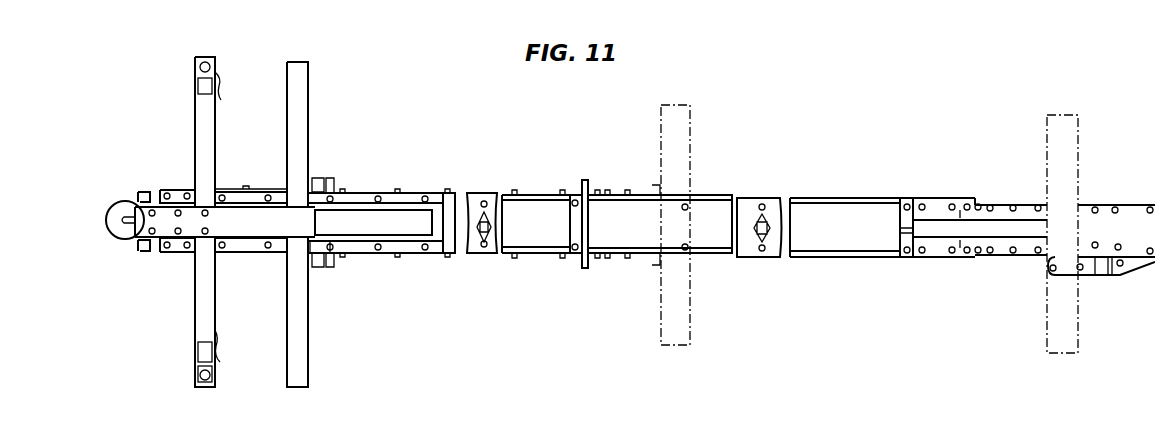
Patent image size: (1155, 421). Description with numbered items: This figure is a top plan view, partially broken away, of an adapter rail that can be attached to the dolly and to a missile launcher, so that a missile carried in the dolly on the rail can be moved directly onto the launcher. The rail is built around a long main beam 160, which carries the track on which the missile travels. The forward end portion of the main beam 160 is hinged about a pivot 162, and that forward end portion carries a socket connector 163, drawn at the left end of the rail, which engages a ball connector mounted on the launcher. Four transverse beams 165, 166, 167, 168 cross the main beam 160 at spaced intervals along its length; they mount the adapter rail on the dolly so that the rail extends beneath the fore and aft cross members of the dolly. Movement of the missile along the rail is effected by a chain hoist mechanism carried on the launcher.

The main beam 160 is at (828, 260).
The pivot 162 is at (327, 222).
The socket connector 163 is at (121, 201).
The transverse beam 165 is at (213, 301).
The transverse beam 166 is at (308, 311).
The transverse beam 167 is at (690, 324).
The transverse beam 168 is at (1078, 315).